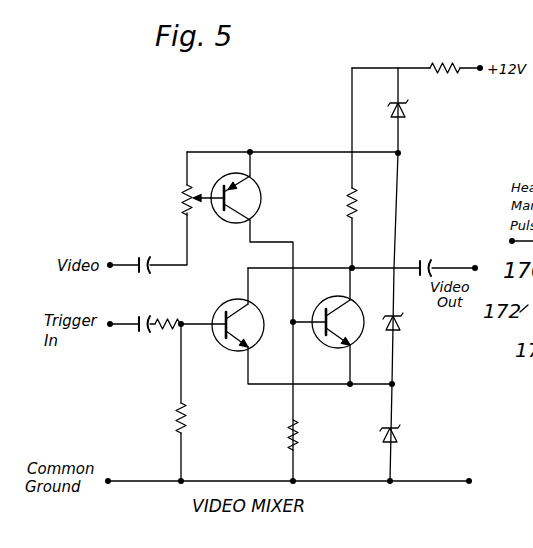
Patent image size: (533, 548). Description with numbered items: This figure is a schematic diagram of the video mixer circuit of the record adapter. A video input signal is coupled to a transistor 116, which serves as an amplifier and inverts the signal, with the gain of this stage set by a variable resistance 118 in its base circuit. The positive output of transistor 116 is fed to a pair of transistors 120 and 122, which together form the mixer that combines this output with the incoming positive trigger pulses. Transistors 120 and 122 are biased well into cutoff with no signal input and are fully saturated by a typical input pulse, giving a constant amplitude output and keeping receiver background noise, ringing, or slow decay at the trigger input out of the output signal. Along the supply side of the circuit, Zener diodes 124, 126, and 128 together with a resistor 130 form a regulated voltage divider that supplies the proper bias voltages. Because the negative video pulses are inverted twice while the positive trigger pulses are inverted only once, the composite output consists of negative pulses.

The transistor 116 is at (295, 180).
The variable resistance 118 is at (183, 187).
The transistor 120 is at (241, 356).
The transistor 122 is at (331, 348).
The Zener diode 124 is at (410, 112).
The Zener diode 126 is at (401, 318).
The Zener diode 128 is at (403, 438).
The resistor 130 is at (432, 63).